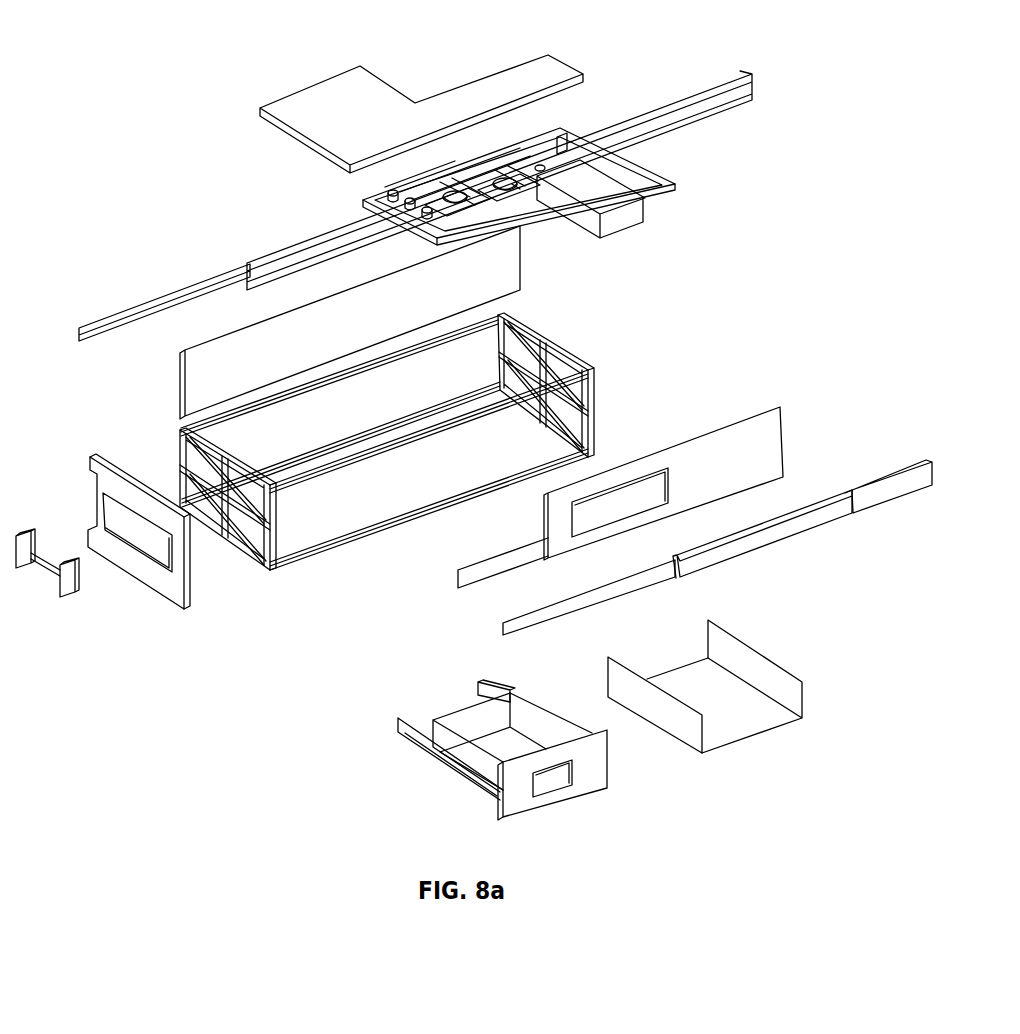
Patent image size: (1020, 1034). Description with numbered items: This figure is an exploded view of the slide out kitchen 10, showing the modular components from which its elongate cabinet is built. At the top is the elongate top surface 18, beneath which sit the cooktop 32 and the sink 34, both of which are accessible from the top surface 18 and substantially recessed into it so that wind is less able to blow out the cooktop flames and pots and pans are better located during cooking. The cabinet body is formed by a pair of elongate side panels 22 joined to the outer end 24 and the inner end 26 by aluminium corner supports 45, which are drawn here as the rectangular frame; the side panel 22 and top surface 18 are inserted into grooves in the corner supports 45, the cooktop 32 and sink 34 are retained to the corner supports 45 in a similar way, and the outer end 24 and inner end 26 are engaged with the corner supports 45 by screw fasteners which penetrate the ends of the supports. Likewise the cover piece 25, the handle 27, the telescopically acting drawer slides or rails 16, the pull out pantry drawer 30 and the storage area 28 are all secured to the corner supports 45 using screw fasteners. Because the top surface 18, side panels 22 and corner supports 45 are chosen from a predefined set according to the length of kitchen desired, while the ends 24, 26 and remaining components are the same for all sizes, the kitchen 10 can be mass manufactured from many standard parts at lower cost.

The slide out kitchen 10 is at (104, 178).
The drawer slides 16 is at (697, 108).
The elongate top surface 18 is at (372, 97).
The elongate sides 22 is at (190, 372).
The outer end 24 is at (265, 568).
The cover piece 25 is at (172, 583).
The inner end 26 is at (595, 400).
The handle 27 is at (62, 597).
The storage area 28 is at (747, 723).
The pull out pantry drawer 30 is at (585, 785).
The cooktop 32 is at (417, 183).
The sink 34 is at (572, 150).
The aluminium corner supports 45 is at (460, 336).